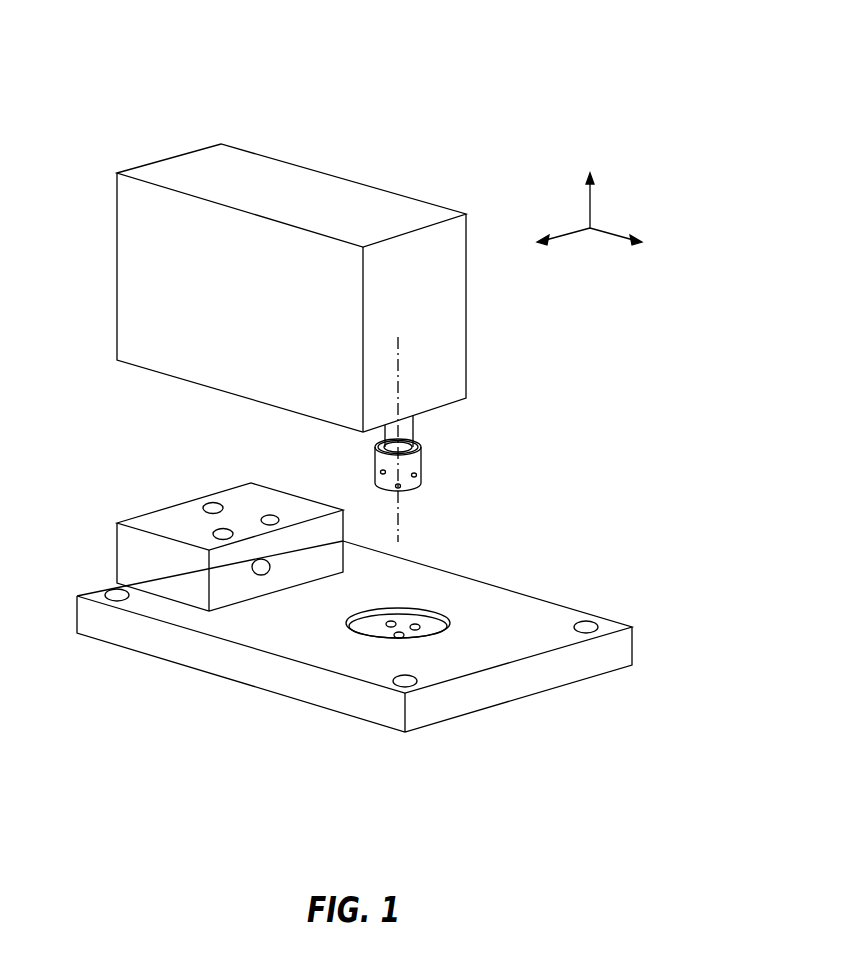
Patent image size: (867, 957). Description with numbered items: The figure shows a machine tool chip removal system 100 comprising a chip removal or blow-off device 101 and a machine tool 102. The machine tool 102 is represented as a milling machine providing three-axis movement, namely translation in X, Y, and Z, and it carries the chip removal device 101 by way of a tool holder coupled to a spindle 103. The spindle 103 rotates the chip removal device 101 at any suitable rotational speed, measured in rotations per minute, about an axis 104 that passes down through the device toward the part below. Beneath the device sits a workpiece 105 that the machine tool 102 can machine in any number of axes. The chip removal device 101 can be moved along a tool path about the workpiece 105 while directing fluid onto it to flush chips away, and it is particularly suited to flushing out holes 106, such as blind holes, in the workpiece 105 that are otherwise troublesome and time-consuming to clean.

The machine tool chip removal system 100 is at (460, 56).
The chip removal device 101 is at (426, 461).
The machine tool 102 is at (467, 195).
The spindle 103 is at (413, 422).
The axis 104 is at (399, 537).
The workpiece 105 is at (128, 503).
The holes 106 is at (212, 503).